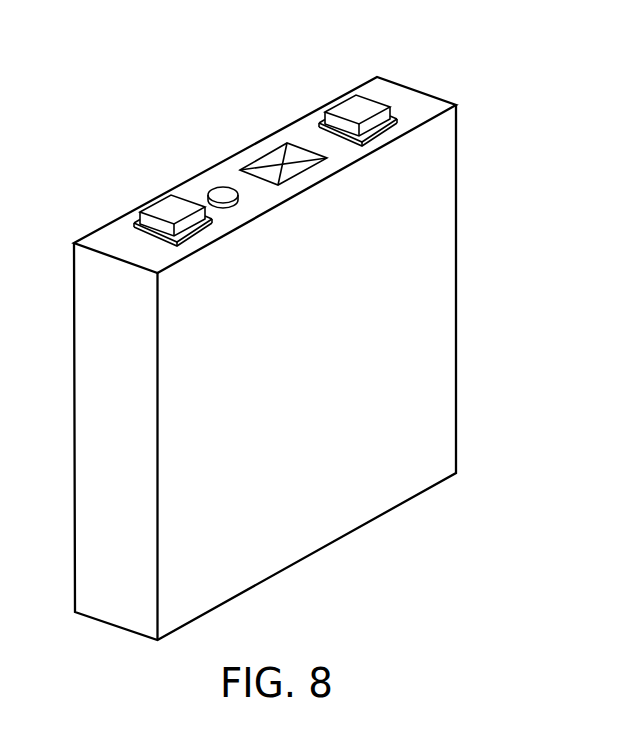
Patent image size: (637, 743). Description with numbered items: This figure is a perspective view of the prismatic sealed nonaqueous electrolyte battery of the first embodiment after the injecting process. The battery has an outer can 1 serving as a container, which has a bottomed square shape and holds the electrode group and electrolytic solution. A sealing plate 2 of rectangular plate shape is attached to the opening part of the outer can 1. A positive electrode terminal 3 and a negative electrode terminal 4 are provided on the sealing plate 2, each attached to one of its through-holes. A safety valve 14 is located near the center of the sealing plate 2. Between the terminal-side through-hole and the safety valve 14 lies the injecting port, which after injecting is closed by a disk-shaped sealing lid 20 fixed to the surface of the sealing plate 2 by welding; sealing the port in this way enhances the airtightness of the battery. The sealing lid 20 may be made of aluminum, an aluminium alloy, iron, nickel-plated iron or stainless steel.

The outer can 1 is at (327, 517).
The sealing plate 2 is at (426, 103).
The positive electrode terminal 3 is at (175, 211).
The negative electrode terminal 4 is at (360, 107).
The safety valve 14 is at (274, 163).
The sealing lid 20 is at (224, 194).